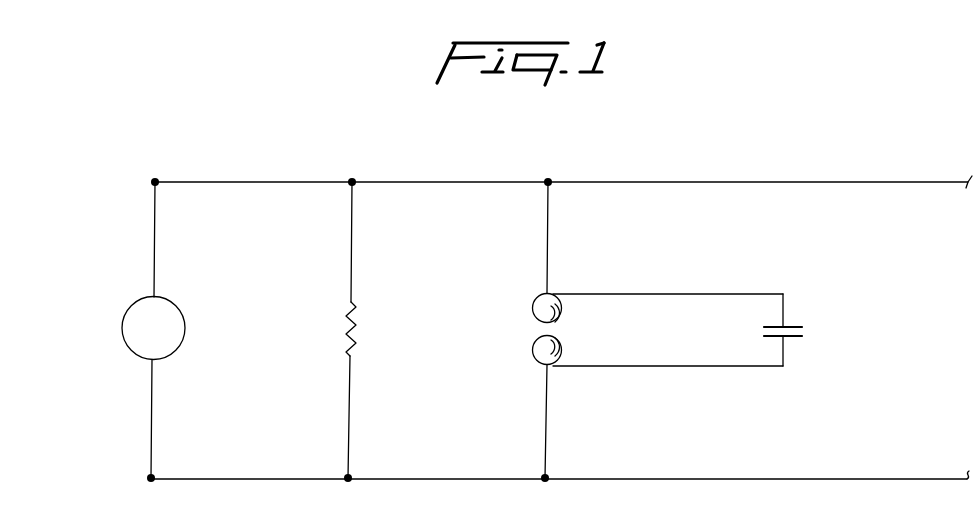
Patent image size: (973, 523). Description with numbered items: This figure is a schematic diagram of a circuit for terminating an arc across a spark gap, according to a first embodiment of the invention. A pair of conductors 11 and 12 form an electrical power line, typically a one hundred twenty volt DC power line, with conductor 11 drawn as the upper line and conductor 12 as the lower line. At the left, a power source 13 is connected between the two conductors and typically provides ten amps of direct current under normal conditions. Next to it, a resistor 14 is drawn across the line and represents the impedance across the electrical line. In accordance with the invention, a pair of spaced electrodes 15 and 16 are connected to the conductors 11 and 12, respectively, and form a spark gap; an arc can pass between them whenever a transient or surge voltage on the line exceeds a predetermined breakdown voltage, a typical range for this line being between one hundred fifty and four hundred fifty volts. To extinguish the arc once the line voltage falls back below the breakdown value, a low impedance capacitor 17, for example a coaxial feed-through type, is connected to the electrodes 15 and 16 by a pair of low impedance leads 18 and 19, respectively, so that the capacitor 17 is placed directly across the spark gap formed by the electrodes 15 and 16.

The conductor 11 is at (868, 183).
The conductor 12 is at (865, 480).
The power source 13 is at (145, 360).
The resistor 14 is at (347, 337).
The electrode 15 is at (533, 304).
The electrode 16 is at (534, 358).
The capacitor 17 is at (788, 327).
The low impedance lead 18 is at (672, 295).
The low impedance lead 19 is at (675, 367).